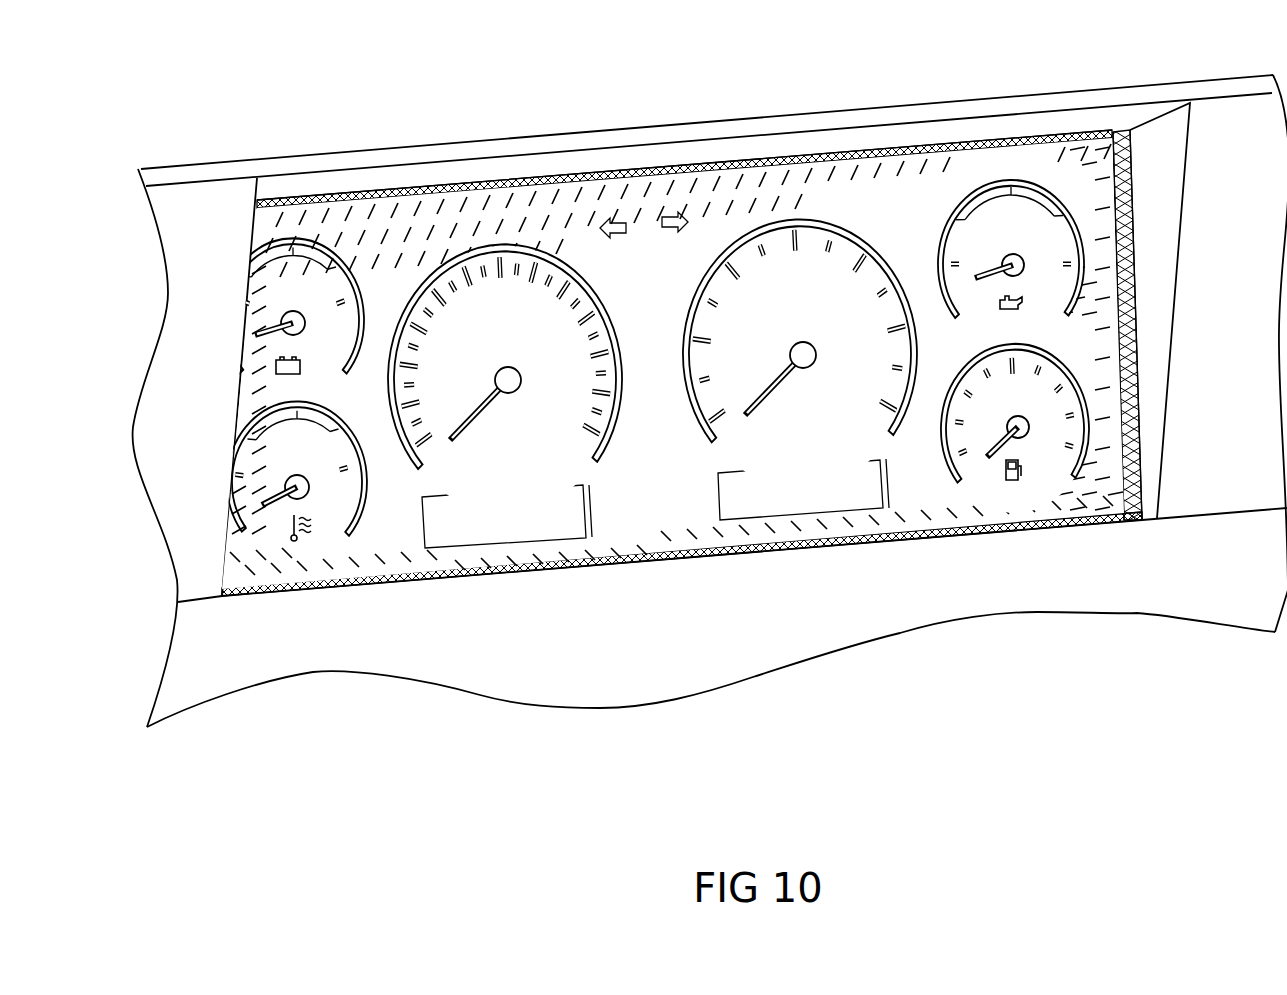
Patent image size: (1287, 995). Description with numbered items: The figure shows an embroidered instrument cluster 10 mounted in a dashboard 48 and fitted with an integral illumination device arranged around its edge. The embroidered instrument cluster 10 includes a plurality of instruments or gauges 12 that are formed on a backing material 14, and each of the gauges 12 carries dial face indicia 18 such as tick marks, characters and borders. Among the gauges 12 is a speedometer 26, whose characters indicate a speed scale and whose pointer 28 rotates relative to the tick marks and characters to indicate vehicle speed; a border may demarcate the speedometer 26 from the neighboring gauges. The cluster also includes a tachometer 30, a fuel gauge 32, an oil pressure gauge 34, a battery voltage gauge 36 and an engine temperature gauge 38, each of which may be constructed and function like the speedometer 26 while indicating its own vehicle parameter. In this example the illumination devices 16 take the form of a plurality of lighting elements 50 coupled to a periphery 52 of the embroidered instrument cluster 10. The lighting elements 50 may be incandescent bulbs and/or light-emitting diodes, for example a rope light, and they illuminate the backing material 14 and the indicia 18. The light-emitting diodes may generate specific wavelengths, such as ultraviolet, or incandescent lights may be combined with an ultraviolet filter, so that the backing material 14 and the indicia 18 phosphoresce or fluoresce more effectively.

The embroidered instrument cluster 10 is at (686, 408).
The instruments or gauges 12 is at (676, 359).
The backing material 14 is at (355, 407).
The illumination devices 16 is at (710, 386).
The dial face indicia 18 is at (626, 361).
The speedometer 26 is at (505, 298).
The pointer 28 is at (709, 410).
The tachometer 30 is at (800, 276).
The fuel gauge 32 is at (1035, 512).
The oil pressure gauge 34 is at (1024, 191).
The battery voltage gauge 36 is at (232, 306).
The engine temperature gauge 38 is at (226, 477).
The dashboard 48 is at (178, 397).
The lighting elements 50 is at (729, 408).
The periphery 52 is at (692, 398).